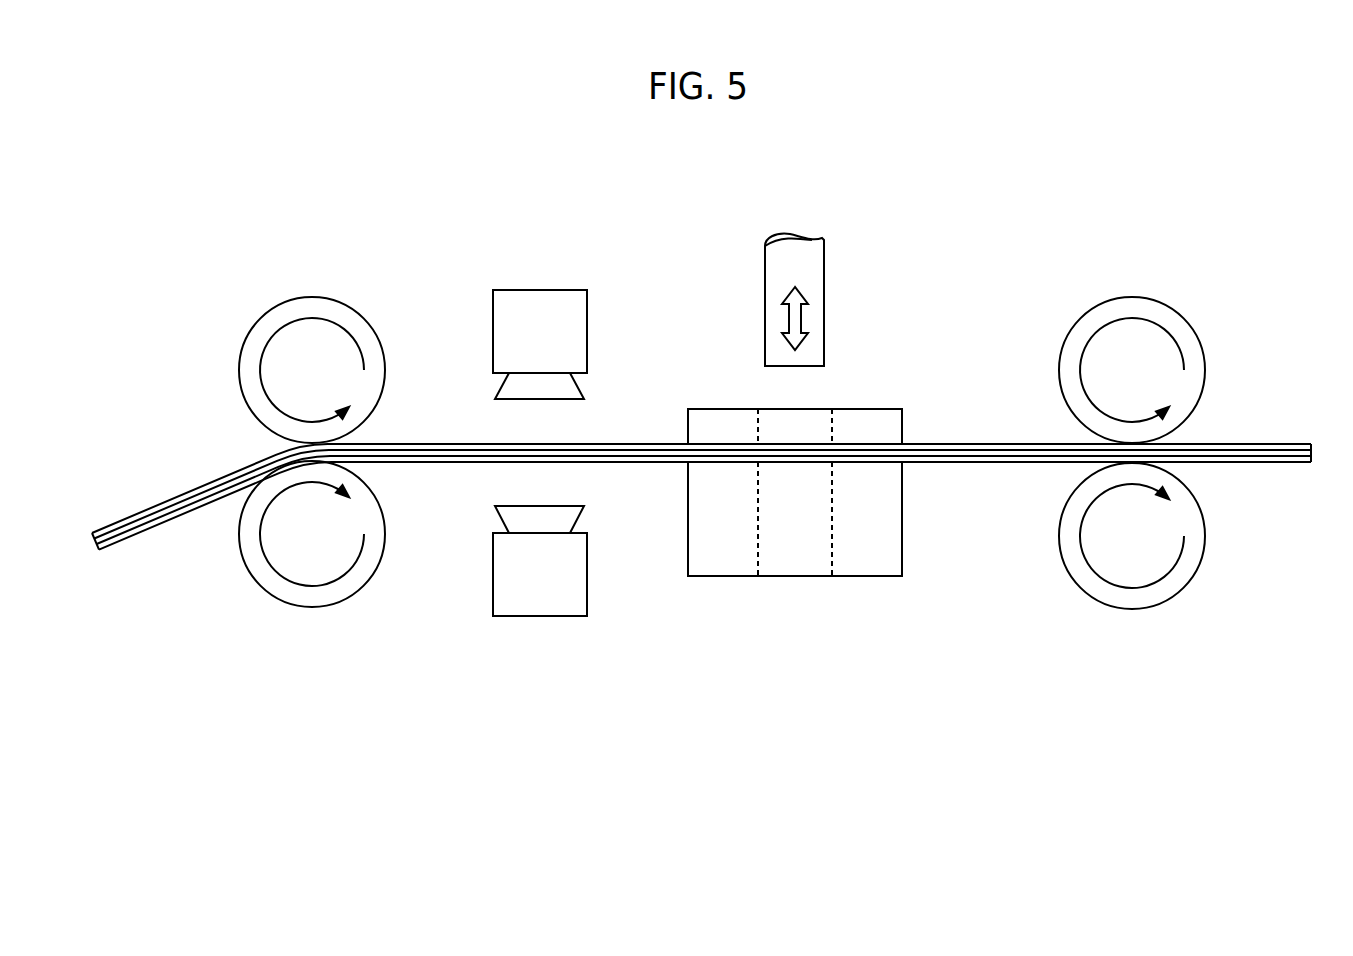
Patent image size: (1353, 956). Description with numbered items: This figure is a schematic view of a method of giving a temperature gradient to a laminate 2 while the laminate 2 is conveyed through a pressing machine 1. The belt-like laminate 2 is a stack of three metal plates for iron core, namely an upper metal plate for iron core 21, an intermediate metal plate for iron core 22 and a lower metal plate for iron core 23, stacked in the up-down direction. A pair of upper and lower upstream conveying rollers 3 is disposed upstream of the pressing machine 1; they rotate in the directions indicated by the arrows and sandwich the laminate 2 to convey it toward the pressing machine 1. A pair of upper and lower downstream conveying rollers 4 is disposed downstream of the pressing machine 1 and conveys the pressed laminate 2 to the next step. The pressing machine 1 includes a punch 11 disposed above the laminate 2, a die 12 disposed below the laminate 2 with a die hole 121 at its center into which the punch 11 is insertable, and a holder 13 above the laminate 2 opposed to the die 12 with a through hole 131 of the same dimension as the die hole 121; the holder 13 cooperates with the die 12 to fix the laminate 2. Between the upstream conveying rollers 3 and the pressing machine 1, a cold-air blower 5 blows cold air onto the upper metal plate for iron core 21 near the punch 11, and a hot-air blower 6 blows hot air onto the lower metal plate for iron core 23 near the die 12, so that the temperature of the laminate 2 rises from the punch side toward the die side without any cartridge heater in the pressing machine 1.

The pressing machine 1 is at (724, 371).
The laminate 2 is at (149, 500).
The upper metal plate for iron core 21 is at (437, 447).
The intermediate metal plate for iron core 22 is at (414, 453).
The lower metal plate for iron core 23 is at (455, 462).
The upstream conveying rollers 3 is at (313, 297).
The downstream conveying rollers 4 is at (1133, 297).
The cold-air blower 5 is at (540, 297).
The hot-air blower 6 is at (540, 616).
The punch 11 is at (825, 250).
The die 12 is at (893, 527).
The holder 13 is at (893, 425).
The die hole 121 is at (766, 543).
The through hole 131 is at (820, 422).